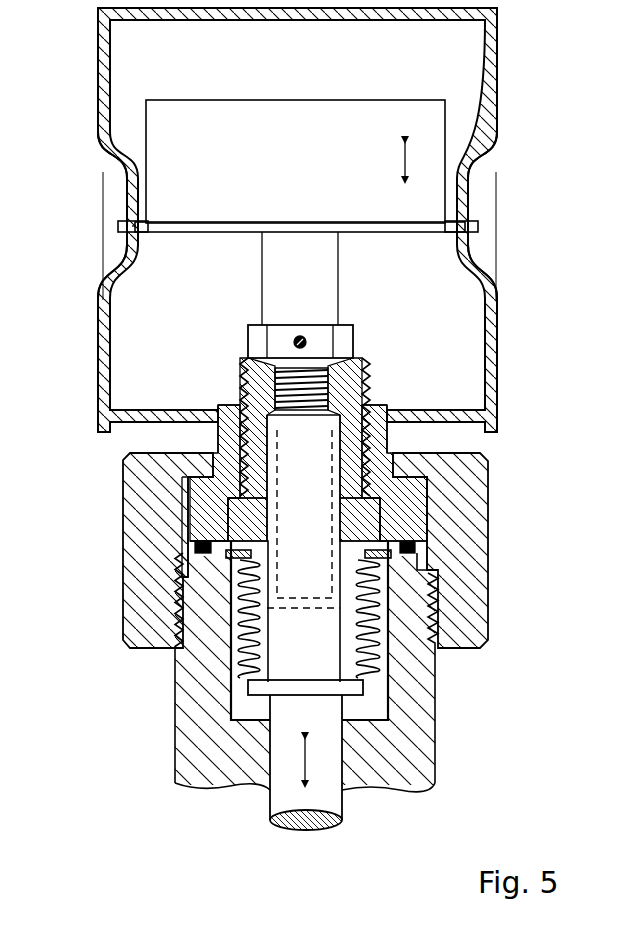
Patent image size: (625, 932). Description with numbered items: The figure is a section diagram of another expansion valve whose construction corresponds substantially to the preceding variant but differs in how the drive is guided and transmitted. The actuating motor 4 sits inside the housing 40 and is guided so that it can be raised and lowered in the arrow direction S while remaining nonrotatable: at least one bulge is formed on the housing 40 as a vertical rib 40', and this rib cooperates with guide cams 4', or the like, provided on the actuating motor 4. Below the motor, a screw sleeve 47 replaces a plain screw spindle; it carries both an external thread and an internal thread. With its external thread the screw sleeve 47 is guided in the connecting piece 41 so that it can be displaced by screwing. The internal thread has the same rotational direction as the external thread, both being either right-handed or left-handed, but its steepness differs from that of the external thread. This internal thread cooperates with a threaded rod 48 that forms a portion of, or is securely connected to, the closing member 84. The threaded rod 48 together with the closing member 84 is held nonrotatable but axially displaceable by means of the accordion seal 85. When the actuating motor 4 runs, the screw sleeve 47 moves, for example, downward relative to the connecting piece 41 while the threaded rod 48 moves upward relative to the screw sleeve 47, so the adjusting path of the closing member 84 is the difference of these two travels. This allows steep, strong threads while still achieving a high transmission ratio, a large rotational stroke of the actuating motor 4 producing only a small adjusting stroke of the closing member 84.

The housing 40 is at (319, 220).
The vertical rib 40' is at (298, 215).
The actuating motor 4 is at (300, 166).
The guide cams 4' is at (313, 233).
The arrow direction S is at (407, 158).
The screw sleeve 47 is at (345, 437).
The connecting piece 41 is at (403, 492).
The threaded rod 48 is at (330, 673).
The accordion seal 85 is at (372, 652).
The closing member 84 is at (326, 796).